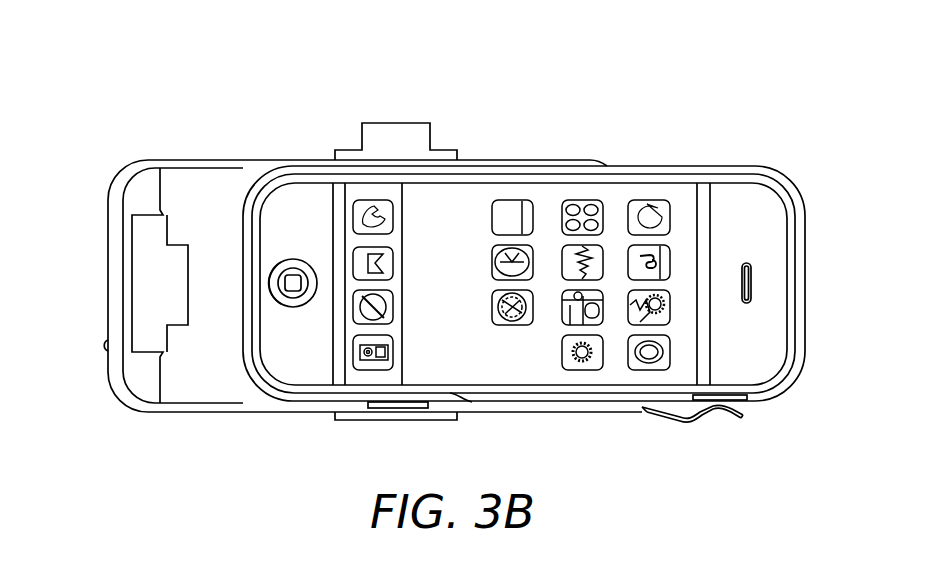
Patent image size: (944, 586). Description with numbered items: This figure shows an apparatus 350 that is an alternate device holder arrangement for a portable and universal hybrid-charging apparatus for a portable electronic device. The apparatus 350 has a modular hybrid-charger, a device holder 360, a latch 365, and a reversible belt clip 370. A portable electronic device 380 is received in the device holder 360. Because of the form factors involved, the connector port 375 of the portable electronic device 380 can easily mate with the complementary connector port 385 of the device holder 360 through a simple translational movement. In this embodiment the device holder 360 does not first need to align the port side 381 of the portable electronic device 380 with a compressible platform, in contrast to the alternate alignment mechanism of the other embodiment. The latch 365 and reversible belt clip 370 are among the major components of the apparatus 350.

The apparatus 350 is at (742, 64).
The device holder 360 is at (188, 159).
The latch 365 is at (693, 420).
The reversible belt clip 370 is at (397, 122).
The connector port 375 is at (241, 287).
The portable electronic device 380 is at (806, 233).
The port side 381 is at (245, 222).
The complementary connector port 385 is at (175, 278).